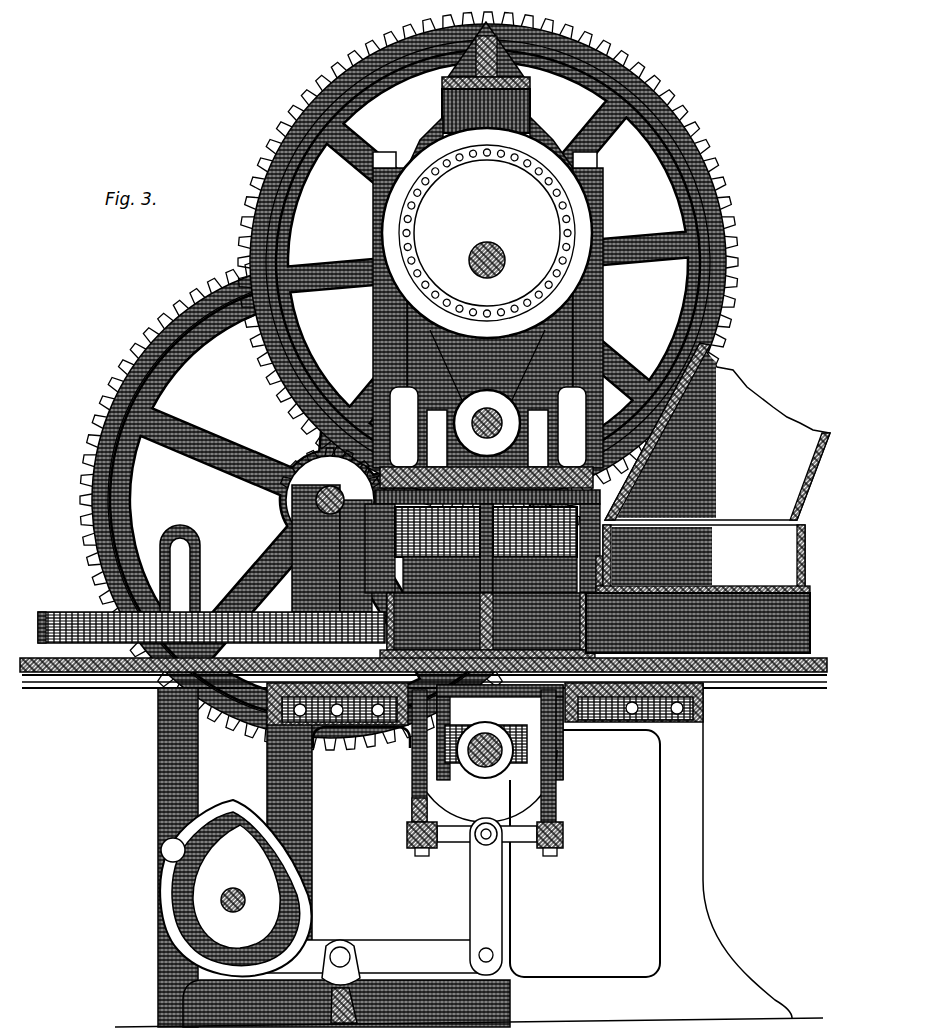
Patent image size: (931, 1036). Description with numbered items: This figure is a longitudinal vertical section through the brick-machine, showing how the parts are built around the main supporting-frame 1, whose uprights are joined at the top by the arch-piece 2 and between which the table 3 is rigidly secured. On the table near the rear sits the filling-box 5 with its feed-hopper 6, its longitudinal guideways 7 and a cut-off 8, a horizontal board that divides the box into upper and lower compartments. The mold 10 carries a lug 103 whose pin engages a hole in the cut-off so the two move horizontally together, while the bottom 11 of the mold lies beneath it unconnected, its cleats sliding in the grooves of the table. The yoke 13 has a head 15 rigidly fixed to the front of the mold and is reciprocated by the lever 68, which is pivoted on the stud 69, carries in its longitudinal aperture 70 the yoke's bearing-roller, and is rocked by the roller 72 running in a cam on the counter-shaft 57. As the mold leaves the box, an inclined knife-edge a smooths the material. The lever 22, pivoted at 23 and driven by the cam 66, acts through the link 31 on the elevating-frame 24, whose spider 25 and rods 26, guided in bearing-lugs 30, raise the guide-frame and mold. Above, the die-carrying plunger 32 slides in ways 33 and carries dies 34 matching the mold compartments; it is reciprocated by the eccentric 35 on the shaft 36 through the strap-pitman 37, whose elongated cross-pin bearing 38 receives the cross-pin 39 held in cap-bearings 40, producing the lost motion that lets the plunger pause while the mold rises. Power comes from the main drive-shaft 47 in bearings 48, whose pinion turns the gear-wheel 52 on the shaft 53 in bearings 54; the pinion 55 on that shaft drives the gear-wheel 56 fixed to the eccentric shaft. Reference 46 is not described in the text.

The main supporting-frame 1 is at (645, 838).
The arch-piece 2 is at (510, 100).
The table 3 is at (150, 689).
The filling-box 5 is at (704, 556).
The feed-hopper 6 is at (717, 431).
The guideways 7 is at (808, 627).
The cut-off 8 is at (790, 590).
The mold 10 is at (496, 724).
The lug 103 is at (598, 592).
The bottom of the mold 11 is at (610, 722).
The yoke 13 is at (236, 620).
The head 15 is at (352, 750).
The lever 22 is at (215, 956).
The pivot 23 is at (343, 946).
The elevating-frame 24 is at (412, 805).
The spider 25 is at (543, 856).
The rods 26 is at (412, 777).
The bearing-lugs 30 is at (401, 727).
The link 31 is at (487, 907).
The die-carrying plunger 32 is at (487, 476).
The ways 33 is at (392, 420).
The dies 34 is at (486, 532).
The eccentric 35 is at (483, 225).
The shaft 36 is at (500, 253).
The strap-pitman 37 is at (585, 292).
The cross-pin bearing 38 is at (488, 406).
The cross-pin 39 is at (462, 436).
The cap-bearings 40 is at (537, 440).
The bed plate 46 is at (30, 658).
The main drive-shaft 47 is at (470, 790).
The bearings 48 is at (472, 826).
The gear-wheel 52 is at (100, 432).
The shaft 53 is at (316, 503).
The bearings 54 is at (290, 497).
The pinion 55 is at (300, 455).
The gear-wheel 56 is at (245, 215).
The counter-shaft 57 is at (172, 950).
The cam 66 is at (178, 885).
The lever 68 is at (160, 857).
The stud 69 is at (161, 851).
The longitudinal aperture 70 is at (166, 540).
The roller 72 is at (222, 904).
The inclined knife-edge a is at (594, 576).